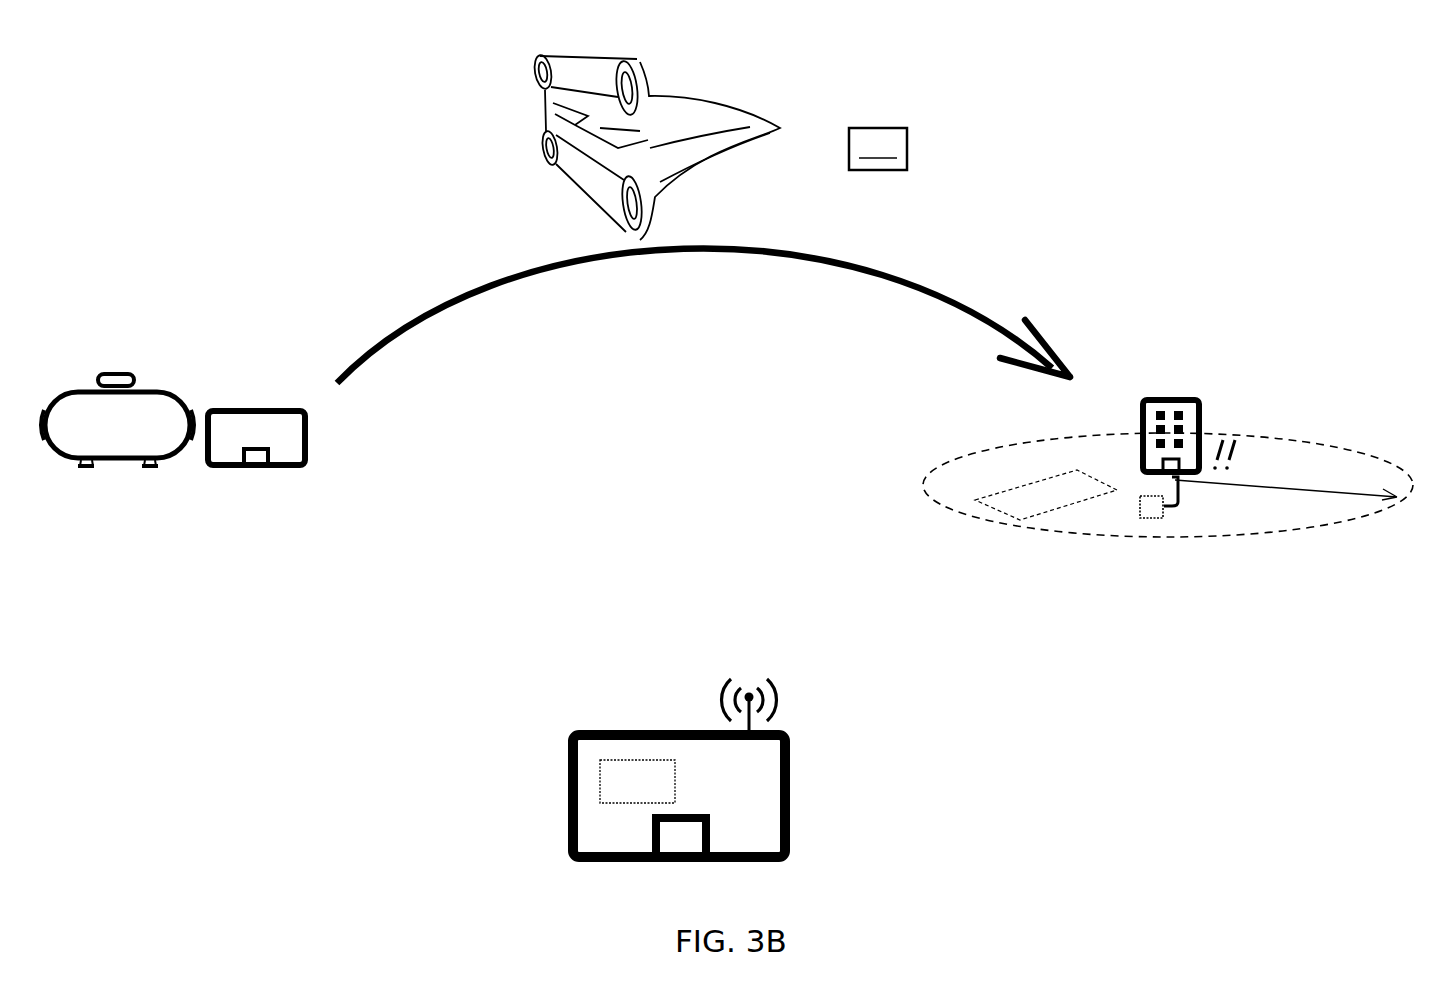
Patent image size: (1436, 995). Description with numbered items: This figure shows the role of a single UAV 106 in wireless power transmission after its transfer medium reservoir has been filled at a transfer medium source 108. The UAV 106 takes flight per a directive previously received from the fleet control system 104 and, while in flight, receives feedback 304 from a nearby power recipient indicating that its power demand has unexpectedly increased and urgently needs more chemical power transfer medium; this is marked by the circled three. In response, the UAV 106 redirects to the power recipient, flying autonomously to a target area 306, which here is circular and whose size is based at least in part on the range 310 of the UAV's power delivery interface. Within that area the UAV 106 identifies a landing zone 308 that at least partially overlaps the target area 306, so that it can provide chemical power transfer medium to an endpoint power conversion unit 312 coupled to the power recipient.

The fleet control system 104 is at (811, 802).
The UAV 106 is at (720, 198).
The transfer medium source 108 is at (180, 342).
The feedback 304 is at (796, 112).
The target area 306 is at (932, 495).
The landing zone 308 is at (1047, 512).
The range 310 is at (1310, 490).
The endpoint power conversion unit 312 is at (1155, 519).